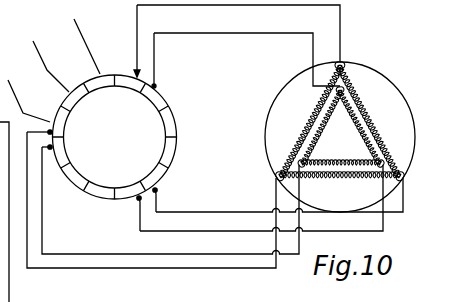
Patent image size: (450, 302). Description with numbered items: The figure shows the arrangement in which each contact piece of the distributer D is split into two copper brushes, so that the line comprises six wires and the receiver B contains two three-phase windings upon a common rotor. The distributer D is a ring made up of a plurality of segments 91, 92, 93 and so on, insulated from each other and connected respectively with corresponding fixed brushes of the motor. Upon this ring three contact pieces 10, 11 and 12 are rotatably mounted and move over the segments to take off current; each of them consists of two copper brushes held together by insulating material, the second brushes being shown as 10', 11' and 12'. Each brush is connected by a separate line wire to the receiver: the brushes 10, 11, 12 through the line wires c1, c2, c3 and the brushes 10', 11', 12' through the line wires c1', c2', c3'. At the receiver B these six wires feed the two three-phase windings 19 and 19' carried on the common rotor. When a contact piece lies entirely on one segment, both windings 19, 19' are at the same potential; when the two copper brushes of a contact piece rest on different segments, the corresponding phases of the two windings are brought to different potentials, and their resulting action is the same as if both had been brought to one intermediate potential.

The segment 91 is at (29, 101).
The segment 92 is at (55, 66).
The segment 93 is at (95, 47).
The contact piece 10 is at (56, 134).
The contact piece 10' is at (65, 148).
The contact piece 11 is at (132, 213).
The contact piece 11' is at (168, 198).
The contact piece 12 is at (179, 60).
The contact piece 12' is at (167, 41).
The three-phase winding 19 is at (340, 121).
The three-phase winding 19' is at (341, 127).
The line wire c1 is at (151, 203).
The line wire c1' is at (170, 203).
The line wire c2 is at (261, 201).
The line wire c2' is at (279, 198).
The line wire c3 is at (247, 52).
The line wire c3' is at (238, 31).
The distributer D is at (115, 137).
The receiver B is at (340, 137).